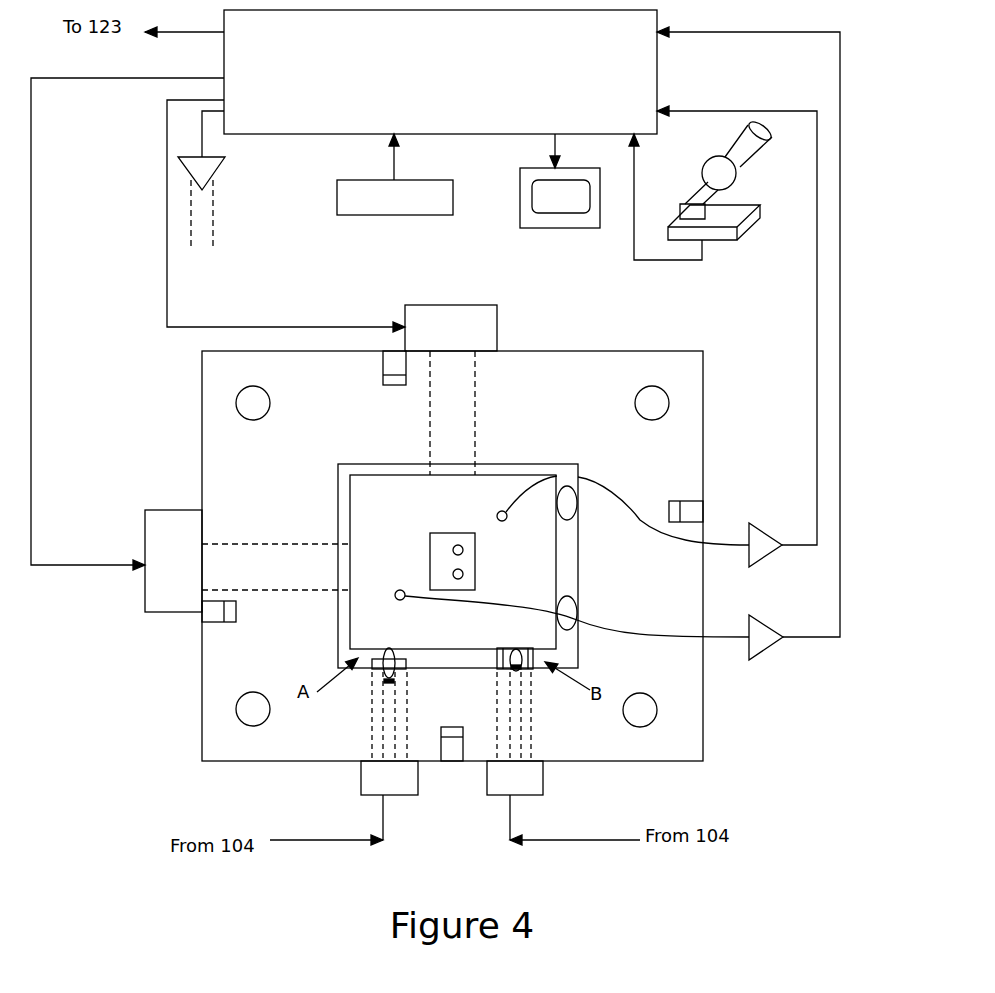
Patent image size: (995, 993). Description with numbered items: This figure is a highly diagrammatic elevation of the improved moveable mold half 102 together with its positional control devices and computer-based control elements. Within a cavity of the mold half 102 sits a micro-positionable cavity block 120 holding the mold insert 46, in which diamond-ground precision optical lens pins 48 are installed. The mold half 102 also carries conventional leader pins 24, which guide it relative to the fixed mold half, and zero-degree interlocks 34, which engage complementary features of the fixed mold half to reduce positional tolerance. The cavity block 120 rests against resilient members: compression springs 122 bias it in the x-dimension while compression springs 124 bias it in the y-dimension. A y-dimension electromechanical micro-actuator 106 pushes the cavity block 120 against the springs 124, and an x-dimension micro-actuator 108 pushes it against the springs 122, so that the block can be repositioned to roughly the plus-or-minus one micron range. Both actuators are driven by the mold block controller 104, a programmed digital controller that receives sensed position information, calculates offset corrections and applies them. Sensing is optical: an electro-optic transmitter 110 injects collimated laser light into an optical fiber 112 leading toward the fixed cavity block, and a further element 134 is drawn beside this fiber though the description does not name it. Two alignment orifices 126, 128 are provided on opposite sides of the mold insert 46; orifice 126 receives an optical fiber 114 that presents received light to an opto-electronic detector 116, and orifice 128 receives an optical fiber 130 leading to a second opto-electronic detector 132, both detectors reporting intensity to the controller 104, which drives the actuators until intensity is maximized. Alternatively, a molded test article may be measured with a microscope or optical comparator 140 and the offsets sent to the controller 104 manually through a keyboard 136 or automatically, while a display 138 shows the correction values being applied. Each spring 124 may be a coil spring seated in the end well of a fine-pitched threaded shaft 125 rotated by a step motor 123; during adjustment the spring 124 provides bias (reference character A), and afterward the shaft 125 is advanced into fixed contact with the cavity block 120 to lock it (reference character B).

The mold block controller 104 is at (440, 72).
The electro-optic transmitter 110 is at (213, 179).
The optical fiber 112 is at (213, 205).
The light path 134 is at (191, 226).
The keyboard 136 is at (398, 215).
The display 138 is at (547, 220).
The microscope or optical comparator 140 is at (721, 232).
The y-dimension electromechanical micro-actuator 106 is at (497, 333).
The improved mold half 102 is at (237, 753).
The leader pins 24 is at (260, 403).
The zero-degree interlocks 34 is at (393, 385).
The x-dimension micro-actuator 108 is at (115, 633).
The micro-positionable cavity block 120 is at (357, 522).
The mold insert 46 is at (437, 565).
The precision optical lens pins 48 is at (460, 545).
The optical alignment orifice 128 is at (537, 528).
The optical fiber 130 is at (693, 542).
The compression springs 122 is at (568, 603).
The alignment orifice 126 is at (404, 599).
The optical fiber 114 is at (668, 638).
The second opto-electronic detector 132 is at (766, 553).
The opto-electronic detector 116 is at (760, 645).
The compression springs 124 is at (512, 648).
The threaded shaft 125 is at (372, 700).
The step motor 123 is at (358, 782).